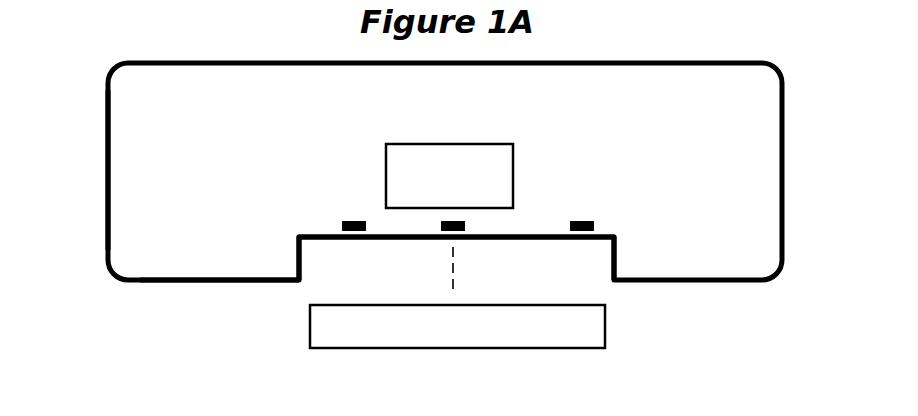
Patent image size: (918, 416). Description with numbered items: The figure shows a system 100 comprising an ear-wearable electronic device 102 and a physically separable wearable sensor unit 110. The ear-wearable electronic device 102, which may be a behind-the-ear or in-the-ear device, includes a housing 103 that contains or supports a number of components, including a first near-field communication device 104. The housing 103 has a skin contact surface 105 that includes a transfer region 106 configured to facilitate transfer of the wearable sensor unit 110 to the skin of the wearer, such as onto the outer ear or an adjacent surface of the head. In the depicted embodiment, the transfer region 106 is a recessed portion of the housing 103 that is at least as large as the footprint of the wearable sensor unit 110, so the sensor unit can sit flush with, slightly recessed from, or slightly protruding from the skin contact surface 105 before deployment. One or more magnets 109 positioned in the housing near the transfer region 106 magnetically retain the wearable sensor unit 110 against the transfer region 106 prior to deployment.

The system 100 is at (692, 336).
The ear-wearable electronic device 102 is at (783, 131).
The housing 103 is at (107, 143).
The first near-field communication (NFC) device 104 is at (514, 178).
The skin contact surface 105 is at (168, 283).
The transfer region 106 is at (322, 280).
The magnets 109 is at (588, 220).
The wearable sensor unit 110 is at (517, 349).